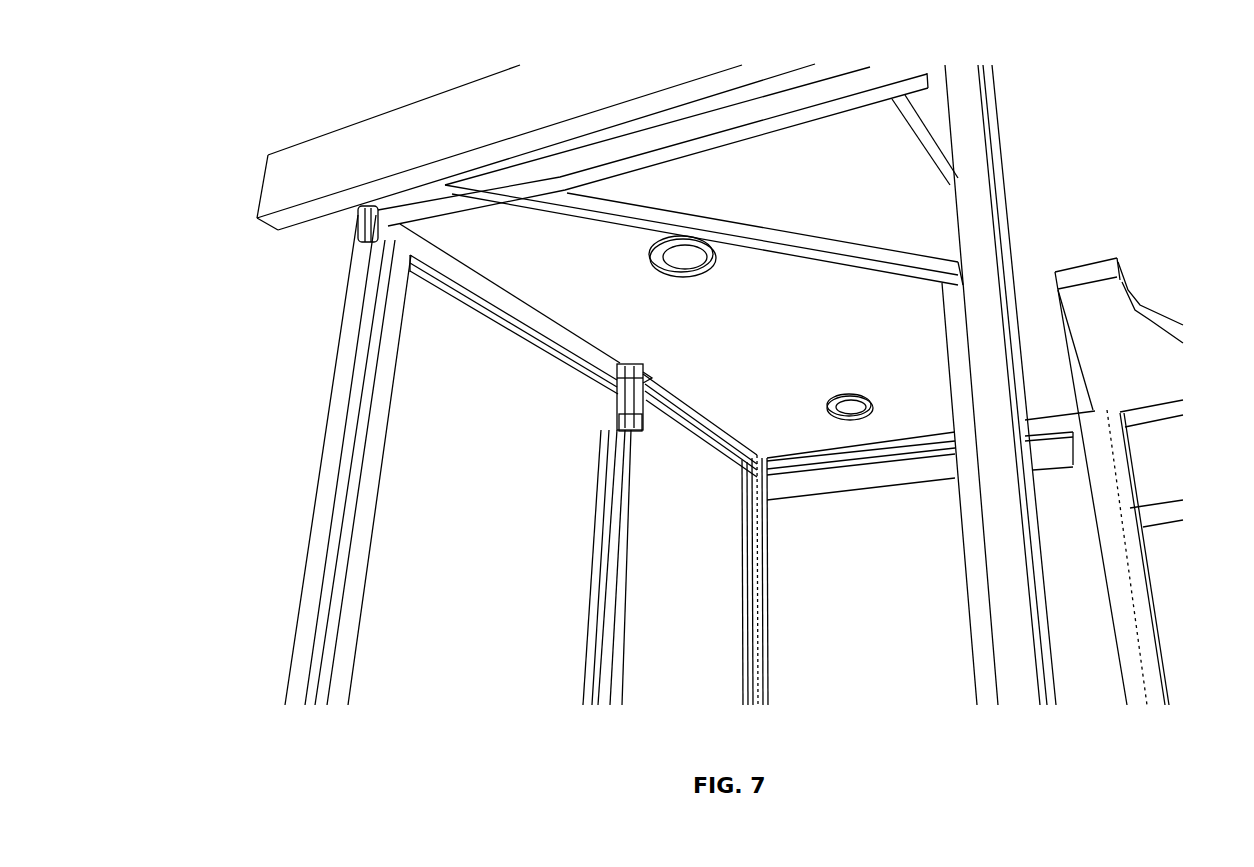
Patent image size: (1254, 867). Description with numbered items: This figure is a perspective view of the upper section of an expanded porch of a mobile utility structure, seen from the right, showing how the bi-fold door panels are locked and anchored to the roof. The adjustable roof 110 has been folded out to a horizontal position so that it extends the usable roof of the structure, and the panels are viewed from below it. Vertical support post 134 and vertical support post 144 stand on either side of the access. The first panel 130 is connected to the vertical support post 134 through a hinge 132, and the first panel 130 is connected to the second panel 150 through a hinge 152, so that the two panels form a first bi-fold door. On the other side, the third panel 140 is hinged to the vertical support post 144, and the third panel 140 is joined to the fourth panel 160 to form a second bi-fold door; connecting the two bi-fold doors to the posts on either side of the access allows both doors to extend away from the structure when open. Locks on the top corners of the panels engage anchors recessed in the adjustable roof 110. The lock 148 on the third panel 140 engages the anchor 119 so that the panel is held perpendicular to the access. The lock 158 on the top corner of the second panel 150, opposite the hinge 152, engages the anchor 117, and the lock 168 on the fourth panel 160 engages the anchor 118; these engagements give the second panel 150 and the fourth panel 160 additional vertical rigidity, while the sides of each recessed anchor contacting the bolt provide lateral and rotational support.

The adjustable roof 110 is at (464, 147).
The anchor 119 is at (574, 147).
The lock 148 is at (320, 263).
The third panel 140 is at (329, 460).
The fourth panel 160 is at (514, 324).
The anchor 118 is at (610, 364).
The anchor 117 is at (672, 356).
The lock 168 is at (578, 561).
The lock 158 is at (647, 463).
The second panel 150 is at (700, 435).
The hinge 152 is at (790, 580).
The first panel 130 is at (931, 481).
The vertical support post 144 is at (1016, 385).
The hinge 132 is at (1140, 481).
The vertical support post 134 is at (1181, 559).